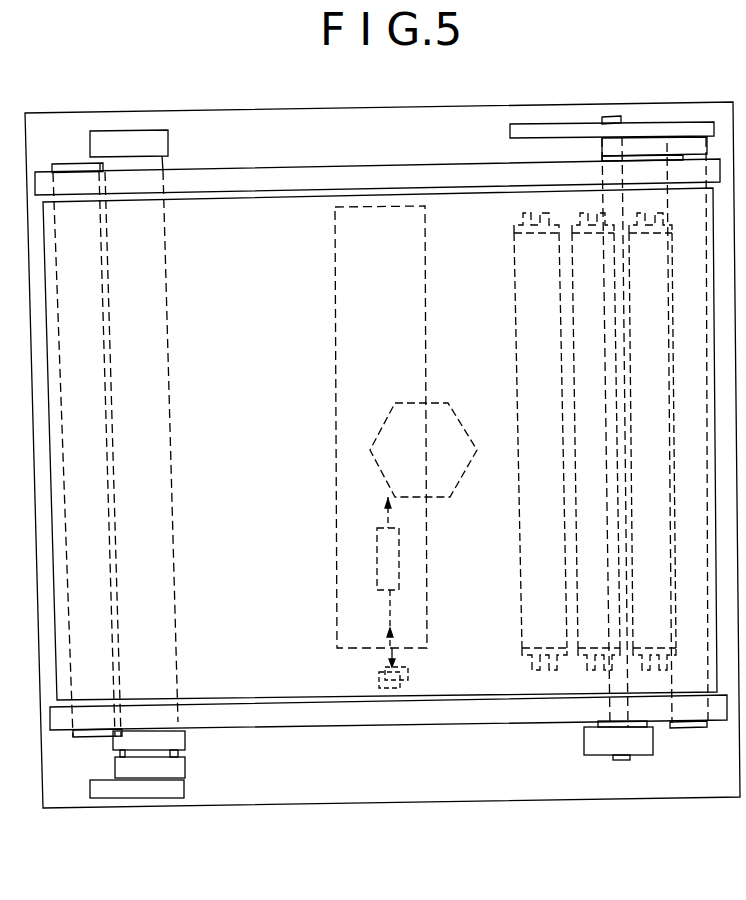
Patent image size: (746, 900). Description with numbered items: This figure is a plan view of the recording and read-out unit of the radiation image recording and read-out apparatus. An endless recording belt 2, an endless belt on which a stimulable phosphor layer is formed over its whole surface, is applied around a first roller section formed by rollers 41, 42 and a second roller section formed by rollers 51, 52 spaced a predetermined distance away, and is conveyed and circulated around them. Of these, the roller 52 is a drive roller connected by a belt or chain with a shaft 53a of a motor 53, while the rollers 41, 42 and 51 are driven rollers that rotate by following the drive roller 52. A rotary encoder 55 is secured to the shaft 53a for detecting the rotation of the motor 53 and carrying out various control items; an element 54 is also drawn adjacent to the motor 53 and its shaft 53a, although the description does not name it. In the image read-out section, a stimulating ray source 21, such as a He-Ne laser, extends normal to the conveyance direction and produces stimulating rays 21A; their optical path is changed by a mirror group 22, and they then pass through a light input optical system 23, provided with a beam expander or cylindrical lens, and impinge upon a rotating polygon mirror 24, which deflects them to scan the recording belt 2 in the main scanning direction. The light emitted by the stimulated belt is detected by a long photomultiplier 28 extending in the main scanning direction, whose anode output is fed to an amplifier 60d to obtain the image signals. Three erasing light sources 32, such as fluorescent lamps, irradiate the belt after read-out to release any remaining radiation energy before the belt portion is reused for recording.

The endless recording belt 2 is at (437, 697).
The stimulating ray source 21 is at (430, 567).
The stimulating rays 21A is at (393, 616).
The mirror group 22 is at (416, 655).
The light input optical system 23 is at (403, 550).
The rotating polygon mirror 24 is at (435, 405).
The photomultiplier 28 is at (157, 415).
The erasing light sources 32 is at (522, 627).
The roller 41 is at (85, 750).
The roller 42 is at (82, 739).
The roller 51 is at (692, 742).
The drive roller 52 is at (681, 728).
The motor 53 is at (548, 123).
The shaft 53a is at (615, 116).
The slider 54 is at (650, 148).
The rotary encoder 55 is at (585, 740).
The amplifier 60d is at (155, 790).